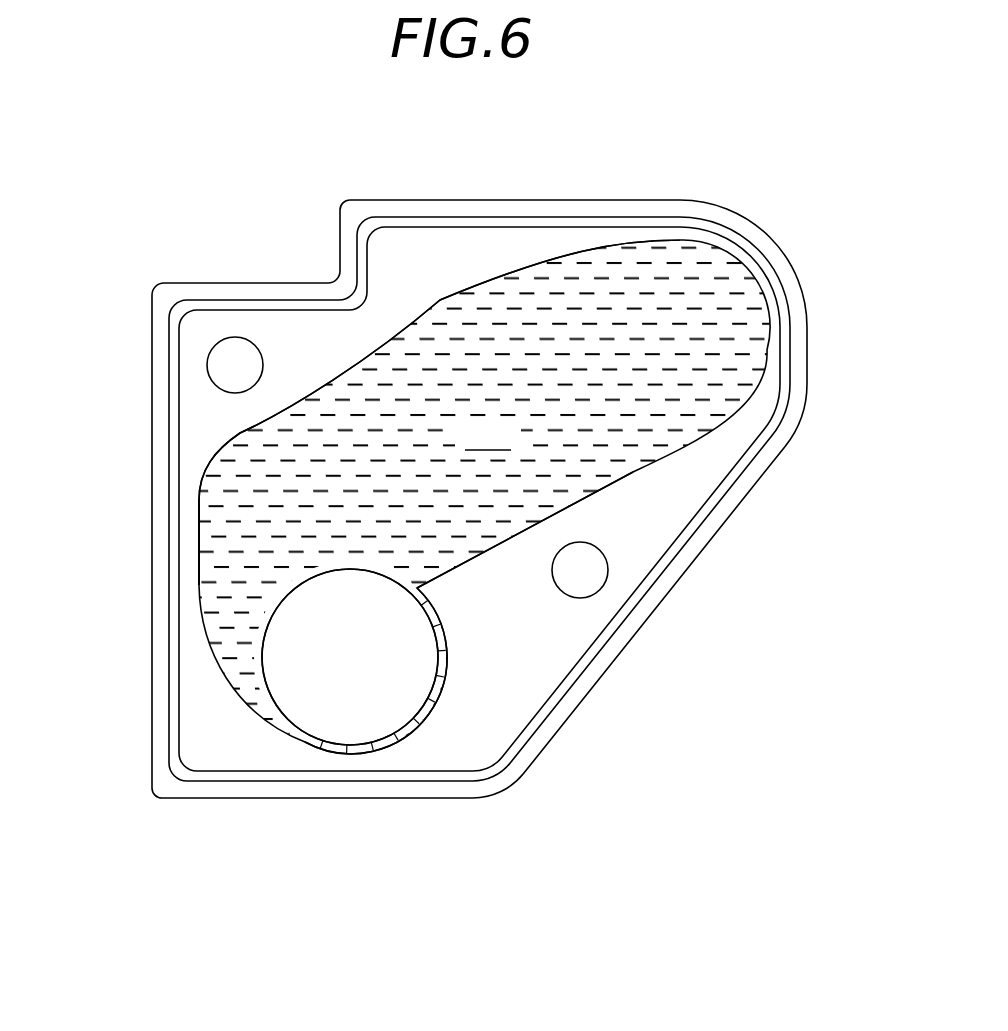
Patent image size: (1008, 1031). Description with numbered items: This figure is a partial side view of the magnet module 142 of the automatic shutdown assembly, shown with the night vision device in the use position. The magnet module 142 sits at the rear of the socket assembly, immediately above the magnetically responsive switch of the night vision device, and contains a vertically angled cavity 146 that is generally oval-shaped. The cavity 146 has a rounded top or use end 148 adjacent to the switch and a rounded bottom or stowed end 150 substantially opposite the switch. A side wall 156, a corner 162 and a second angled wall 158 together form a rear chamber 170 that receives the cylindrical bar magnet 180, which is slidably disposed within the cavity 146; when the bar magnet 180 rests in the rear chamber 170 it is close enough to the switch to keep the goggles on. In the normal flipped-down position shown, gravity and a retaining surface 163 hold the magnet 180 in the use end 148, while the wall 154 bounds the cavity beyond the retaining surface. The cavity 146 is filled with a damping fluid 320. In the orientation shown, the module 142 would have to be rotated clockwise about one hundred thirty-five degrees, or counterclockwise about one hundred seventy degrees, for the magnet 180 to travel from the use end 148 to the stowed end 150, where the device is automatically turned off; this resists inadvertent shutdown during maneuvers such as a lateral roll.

The magnet module 142 is at (162, 217).
The vertically angled cavity 146 is at (718, 337).
The use end 148 is at (342, 750).
The stowed end 150 is at (703, 270).
The partition wall 154 is at (633, 472).
The side wall 156 is at (197, 547).
The second angled wall 158 is at (333, 373).
The corner 162 is at (205, 473).
The retaining surface 163 is at (440, 682).
The rear chamber 170 is at (247, 460).
The bar magnet 180 is at (313, 707).
The damping fluid 320 is at (488, 437).